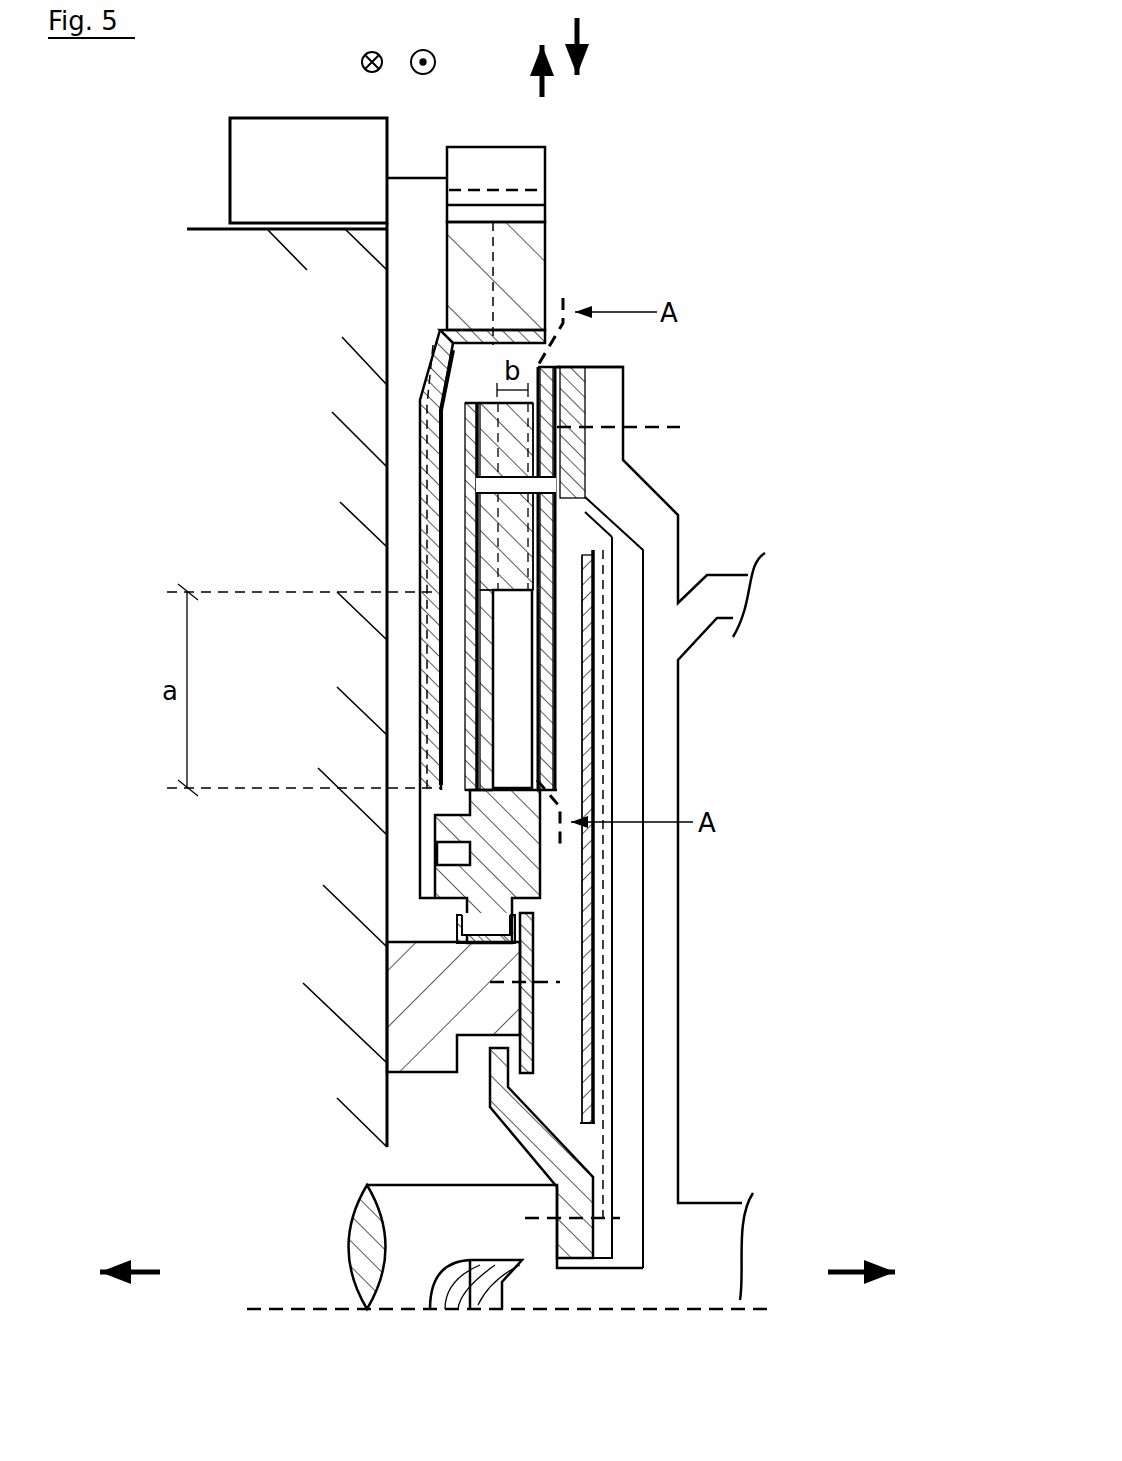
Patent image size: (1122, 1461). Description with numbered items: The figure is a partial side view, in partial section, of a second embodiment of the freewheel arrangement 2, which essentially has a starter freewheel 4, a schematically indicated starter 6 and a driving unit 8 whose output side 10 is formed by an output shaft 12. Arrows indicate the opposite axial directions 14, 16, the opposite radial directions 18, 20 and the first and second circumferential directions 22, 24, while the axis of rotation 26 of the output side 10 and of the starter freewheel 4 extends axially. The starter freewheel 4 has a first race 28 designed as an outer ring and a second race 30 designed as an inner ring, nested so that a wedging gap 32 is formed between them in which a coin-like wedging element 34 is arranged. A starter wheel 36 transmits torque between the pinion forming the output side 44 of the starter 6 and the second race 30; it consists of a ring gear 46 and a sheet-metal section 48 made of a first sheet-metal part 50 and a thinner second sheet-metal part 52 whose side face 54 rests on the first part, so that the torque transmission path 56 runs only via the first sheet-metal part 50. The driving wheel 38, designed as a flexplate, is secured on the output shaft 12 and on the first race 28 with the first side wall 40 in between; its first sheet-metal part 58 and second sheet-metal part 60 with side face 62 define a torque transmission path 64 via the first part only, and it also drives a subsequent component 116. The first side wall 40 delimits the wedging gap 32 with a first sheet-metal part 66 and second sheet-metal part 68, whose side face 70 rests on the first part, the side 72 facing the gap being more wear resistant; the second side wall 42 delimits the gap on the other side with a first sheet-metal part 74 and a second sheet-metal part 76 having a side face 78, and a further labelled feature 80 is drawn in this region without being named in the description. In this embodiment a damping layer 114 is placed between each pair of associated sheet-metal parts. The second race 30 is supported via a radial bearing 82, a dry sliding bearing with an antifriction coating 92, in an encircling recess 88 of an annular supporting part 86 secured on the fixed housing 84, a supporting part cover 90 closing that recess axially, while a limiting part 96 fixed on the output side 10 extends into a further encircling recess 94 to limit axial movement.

The freewheel arrangement 2 is at (765, 177).
The starter freewheel 4 is at (395, 393).
The starter 6 is at (310, 183).
The driving unit 8 is at (214, 851).
The output side 10 is at (362, 1168).
The output shaft 12 is at (408, 1270).
The axial direction 14 is at (853, 1268).
The axial direction 16 is at (118, 1270).
The radial direction 18 is at (538, 83).
The radial direction 20 is at (582, 38).
The first circumferential direction 22 is at (360, 62).
The second circumferential direction 24 is at (432, 52).
The axis of rotation 26 is at (285, 1305).
The first race 28 is at (518, 528).
The second race 30 is at (475, 884).
The wedging gap 32 is at (558, 720).
The wedging element 34 is at (512, 663).
The starter wheel 36 is at (436, 560).
The driving wheel 38 is at (625, 888).
The first side wall 40 is at (575, 672).
The second side wall 42 is at (455, 572).
The output side of the starter 44 is at (520, 168).
The ring gear 46 is at (515, 265).
The sheet-metal section 48 is at (405, 472).
The first sheet-metal part 50 is at (437, 443).
The second sheet-metal part 52 is at (437, 425).
The side face 54 is at (440, 755).
The torque transmission path 56 is at (493, 306).
The first sheet-metal part 58 is at (600, 927).
The second sheet-metal part 60 is at (588, 962).
The side face 62 is at (600, 990).
The torque transmission path 64 is at (587, 530).
The first sheet-metal part 66 is at (605, 588).
The second sheet-metal part 68 is at (565, 635).
The side face 70 is at (590, 497).
The side 72 is at (530, 636).
The first sheet-metal part 74 is at (497, 720).
The second sheet-metal part 76 is at (498, 727).
The side face 78 is at (432, 797).
The gap 80 is at (568, 742).
The radial bearing 82 is at (432, 946).
The fixed housing 84 is at (215, 228).
The supporting part 86 is at (407, 1017).
The encircling recess 88 is at (520, 940).
The supporting part cover 90 is at (533, 1017).
The antifriction coating 92 is at (592, 948).
The encircling recess 94 is at (470, 1049).
The limiting part 96 is at (548, 1153).
The damping layer 114 is at (600, 500).
The subsequent component 116 is at (690, 803).